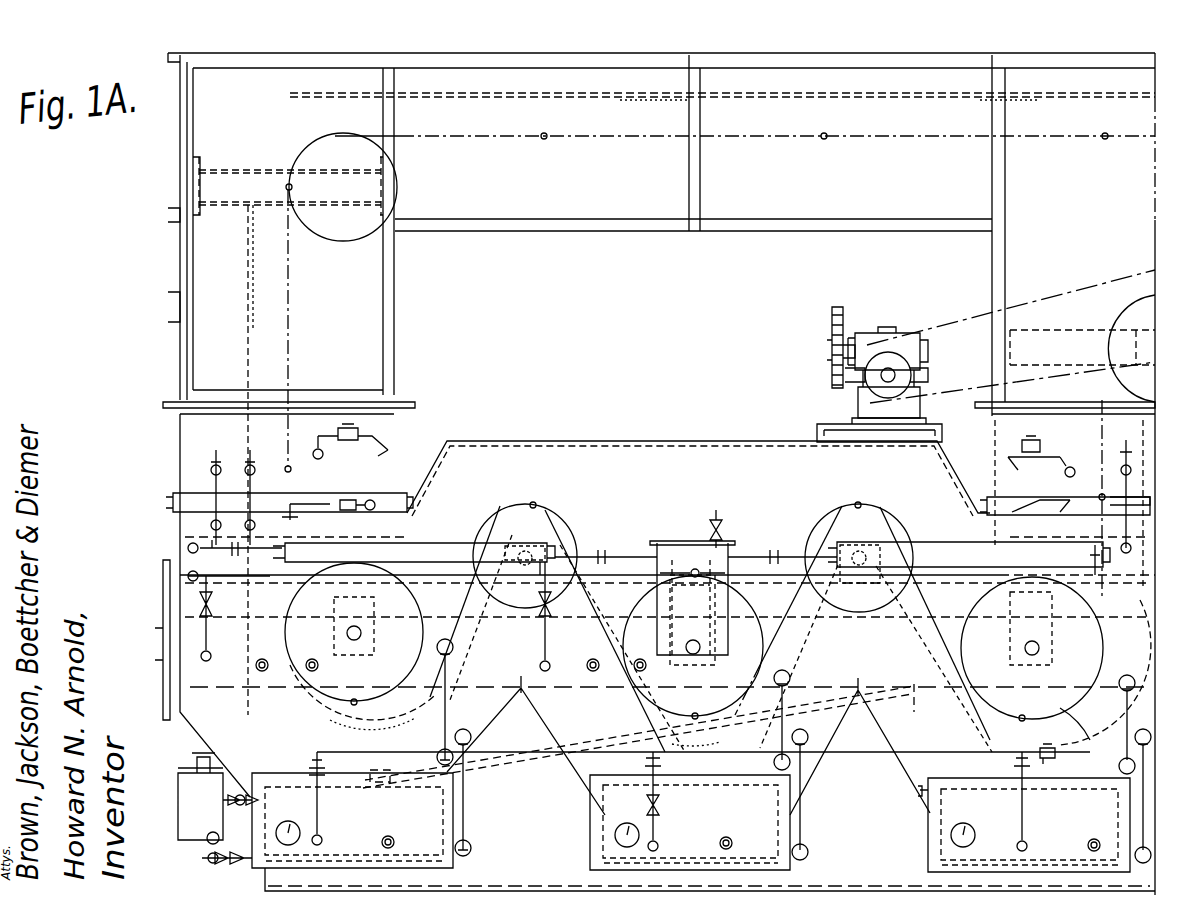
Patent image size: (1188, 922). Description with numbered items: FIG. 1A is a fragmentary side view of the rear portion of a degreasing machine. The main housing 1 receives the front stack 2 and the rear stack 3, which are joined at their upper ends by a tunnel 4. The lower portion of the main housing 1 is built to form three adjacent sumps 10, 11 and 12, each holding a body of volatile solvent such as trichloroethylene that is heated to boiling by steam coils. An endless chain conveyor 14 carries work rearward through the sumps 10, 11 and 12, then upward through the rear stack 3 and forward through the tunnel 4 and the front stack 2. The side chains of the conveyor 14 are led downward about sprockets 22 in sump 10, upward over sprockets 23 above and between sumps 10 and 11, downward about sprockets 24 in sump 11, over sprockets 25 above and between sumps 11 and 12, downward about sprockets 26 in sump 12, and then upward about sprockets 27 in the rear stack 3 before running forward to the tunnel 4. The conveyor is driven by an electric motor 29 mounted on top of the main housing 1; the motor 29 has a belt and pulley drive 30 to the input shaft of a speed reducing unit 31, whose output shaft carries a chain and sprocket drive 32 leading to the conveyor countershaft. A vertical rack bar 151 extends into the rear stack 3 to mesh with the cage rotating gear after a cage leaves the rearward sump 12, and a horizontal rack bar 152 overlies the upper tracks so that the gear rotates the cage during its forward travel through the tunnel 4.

The main housing 1 is at (680, 448).
The front stack 2 is at (1002, 270).
The rear stack 3 is at (396, 278).
The tunnel 4 is at (636, 90).
The sump 10 is at (934, 736).
The sump 11 is at (594, 726).
The sump 12 is at (262, 748).
The endless chain conveyor 14 is at (628, 140).
The sprockets 22 is at (1056, 665).
The sprockets 23 is at (874, 506).
The sprockets 24 is at (760, 672).
The sprockets 25 is at (540, 504).
The sprockets 26 is at (388, 695).
The sprockets 27 is at (330, 140).
The electric motor 29 is at (920, 368).
The belt and pulley drive 30 is at (1112, 320).
The speed reducing unit 31 is at (872, 333).
The chain and sprocket drive 32 is at (1066, 298).
The vertical rack bar 151 is at (260, 360).
The horizontal rack bar 152 is at (530, 95).